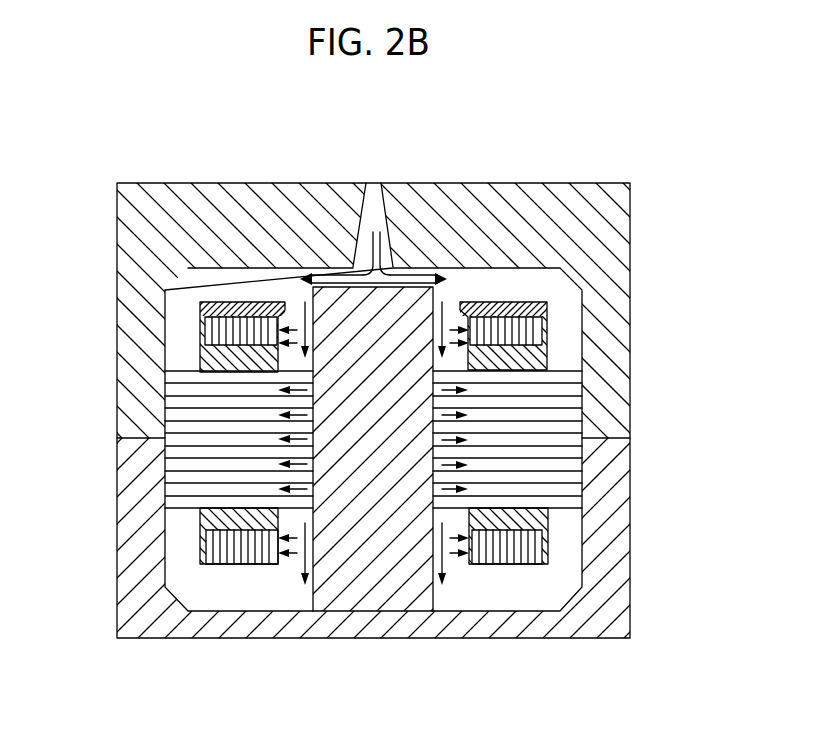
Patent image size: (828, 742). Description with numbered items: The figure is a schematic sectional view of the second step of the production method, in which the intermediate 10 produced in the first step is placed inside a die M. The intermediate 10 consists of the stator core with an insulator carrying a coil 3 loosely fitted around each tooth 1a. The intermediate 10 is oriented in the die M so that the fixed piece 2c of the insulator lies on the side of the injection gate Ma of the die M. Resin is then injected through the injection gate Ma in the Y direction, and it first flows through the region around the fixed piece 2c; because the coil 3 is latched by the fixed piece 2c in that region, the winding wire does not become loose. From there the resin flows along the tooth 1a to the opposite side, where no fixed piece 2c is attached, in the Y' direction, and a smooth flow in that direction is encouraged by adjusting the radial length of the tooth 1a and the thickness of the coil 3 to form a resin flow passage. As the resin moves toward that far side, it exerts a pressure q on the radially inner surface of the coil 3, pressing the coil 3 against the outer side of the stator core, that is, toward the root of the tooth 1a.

The die M is at (140, 253).
The intermediate 10 is at (567, 336).
The tooth 1a is at (173, 413).
The fixed piece 2c is at (243, 302).
The coil 3 is at (237, 548).
The injection gate Ma is at (373, 192).
The Y direction Y is at (379, 205).
The Y' direction Y' is at (376, 455).
The pressure q is at (290, 322).